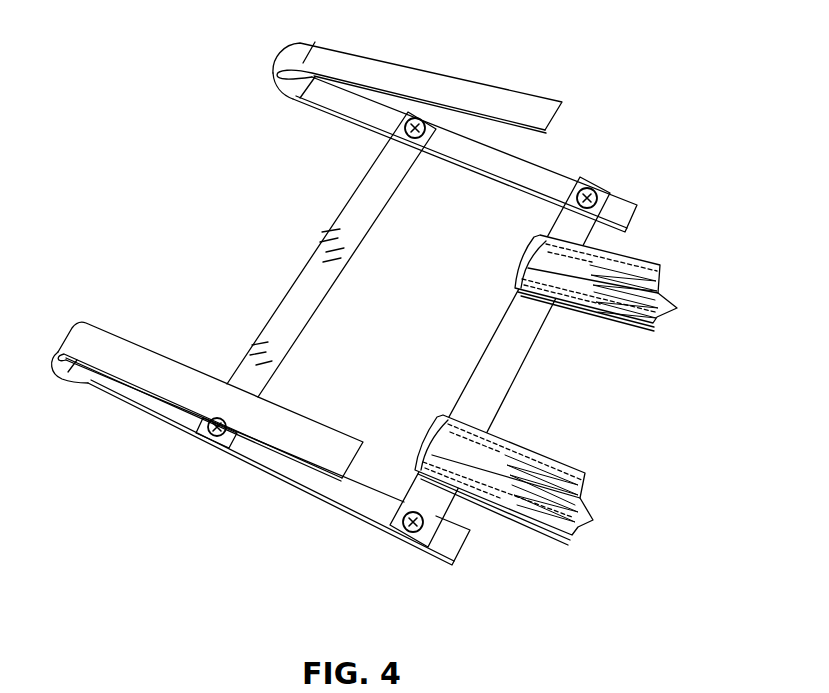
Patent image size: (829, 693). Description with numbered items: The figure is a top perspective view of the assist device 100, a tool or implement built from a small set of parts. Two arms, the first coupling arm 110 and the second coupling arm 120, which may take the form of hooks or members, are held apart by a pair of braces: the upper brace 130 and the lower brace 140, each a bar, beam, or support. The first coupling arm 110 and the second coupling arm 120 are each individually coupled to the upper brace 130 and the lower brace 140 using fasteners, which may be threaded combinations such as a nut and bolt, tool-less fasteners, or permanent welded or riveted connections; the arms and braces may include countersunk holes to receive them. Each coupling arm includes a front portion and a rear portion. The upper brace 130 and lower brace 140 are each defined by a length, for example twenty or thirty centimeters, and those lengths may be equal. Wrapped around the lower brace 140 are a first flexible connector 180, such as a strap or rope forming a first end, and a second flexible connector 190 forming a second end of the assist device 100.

The assist device 100 is at (190, 138).
The first coupling arm 110 is at (642, 88).
The second coupling arm 120 is at (262, 550).
The upper brace 130 is at (280, 303).
The lower brace 140 is at (514, 382).
The first flexible connector 180 is at (530, 532).
The second flexible connector 190 is at (621, 325).